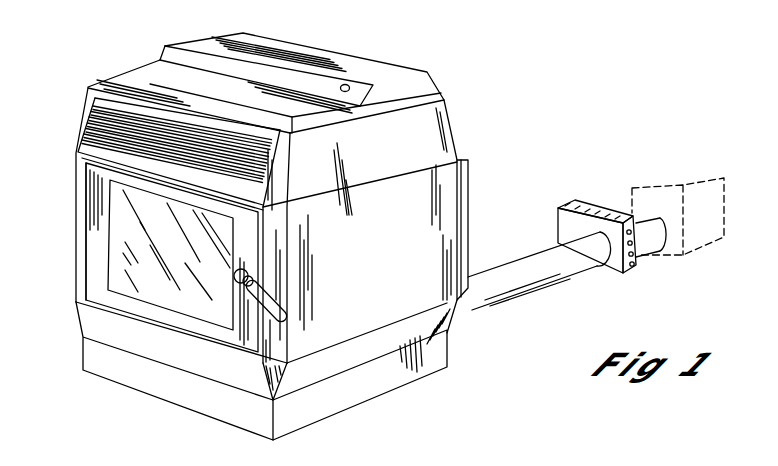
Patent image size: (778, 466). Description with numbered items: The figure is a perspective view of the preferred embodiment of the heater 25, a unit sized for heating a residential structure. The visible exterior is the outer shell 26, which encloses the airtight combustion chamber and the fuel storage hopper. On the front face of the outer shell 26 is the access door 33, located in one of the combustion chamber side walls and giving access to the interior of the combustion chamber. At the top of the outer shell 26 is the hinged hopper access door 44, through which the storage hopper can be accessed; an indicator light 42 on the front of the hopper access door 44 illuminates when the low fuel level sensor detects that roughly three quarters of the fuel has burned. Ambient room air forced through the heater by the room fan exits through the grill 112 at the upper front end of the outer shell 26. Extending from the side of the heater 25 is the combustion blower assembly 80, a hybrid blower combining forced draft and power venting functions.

The heater 25 is at (463, 120).
The outer shell 26 is at (430, 220).
The access door 33 is at (97, 180).
The indicator light 42 is at (345, 86).
The hopper access door 44 is at (288, 43).
The combustion blower assembly 80 is at (640, 187).
The grill 112 is at (100, 124).